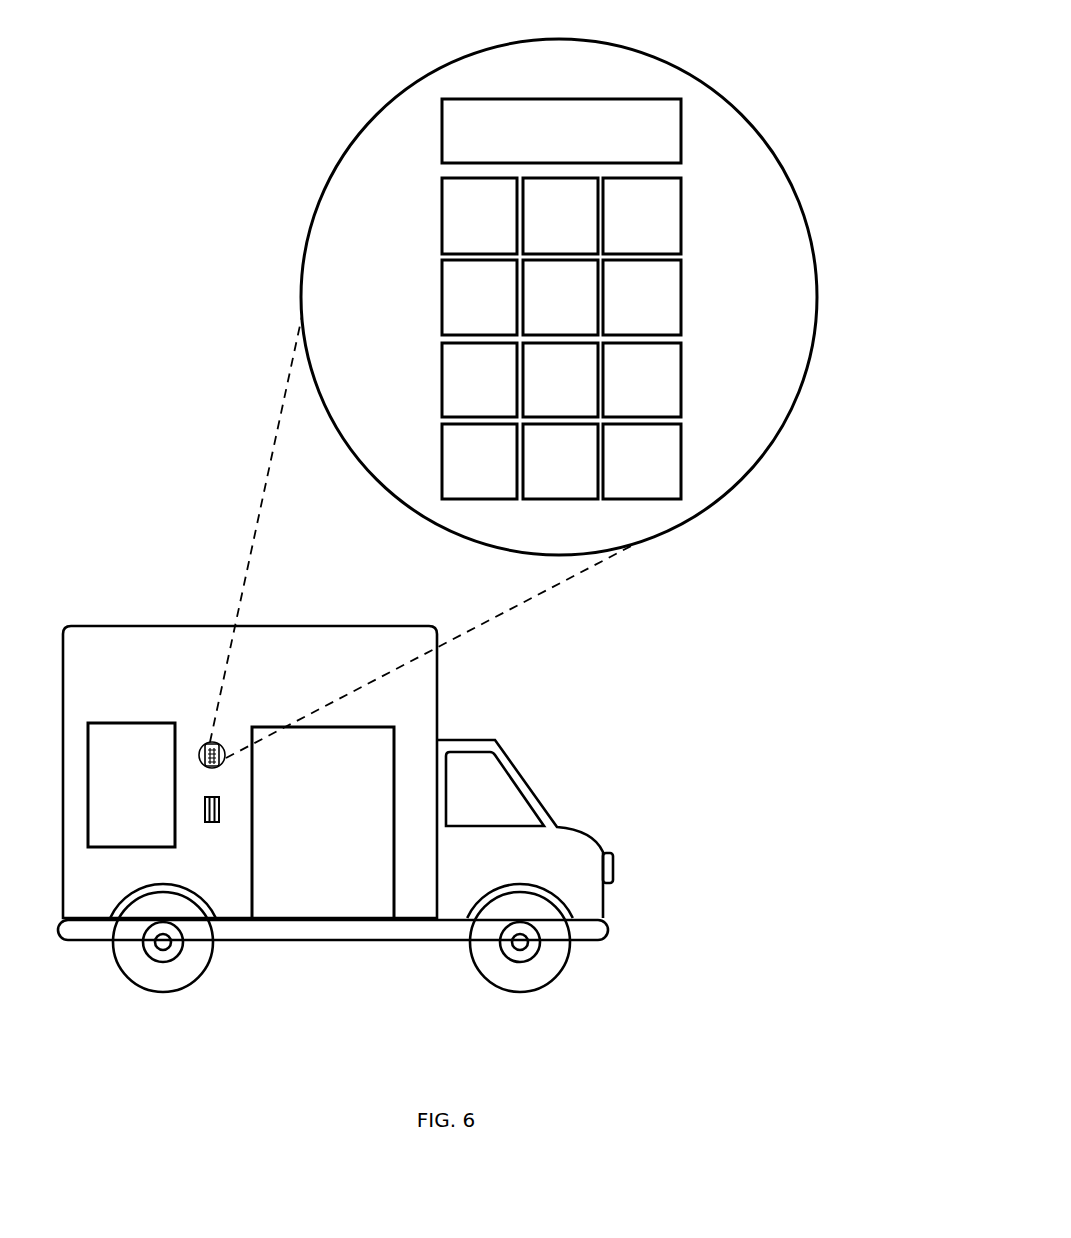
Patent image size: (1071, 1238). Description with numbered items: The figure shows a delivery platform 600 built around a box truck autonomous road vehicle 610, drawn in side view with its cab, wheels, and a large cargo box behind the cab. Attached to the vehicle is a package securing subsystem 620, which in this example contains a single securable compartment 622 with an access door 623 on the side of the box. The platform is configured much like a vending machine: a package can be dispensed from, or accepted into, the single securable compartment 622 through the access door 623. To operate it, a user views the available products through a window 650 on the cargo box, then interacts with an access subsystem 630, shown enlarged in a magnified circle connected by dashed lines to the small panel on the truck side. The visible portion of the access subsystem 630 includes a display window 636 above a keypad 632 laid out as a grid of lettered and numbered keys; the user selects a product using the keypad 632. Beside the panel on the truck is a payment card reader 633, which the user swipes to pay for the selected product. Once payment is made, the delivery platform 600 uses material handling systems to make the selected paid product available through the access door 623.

The delivery platform 600 is at (119, 31).
The box truck autonomous road vehicle 610 is at (636, 855).
The package securing subsystem 620 is at (135, 607).
The single securable compartment 622 is at (212, 626).
The access door 623 is at (290, 826).
The access subsystem 630 is at (346, 186).
The keypad 632 is at (428, 284).
The payment card reader 633 is at (217, 832).
The display window 636 is at (545, 141).
The window 650 is at (131, 785).